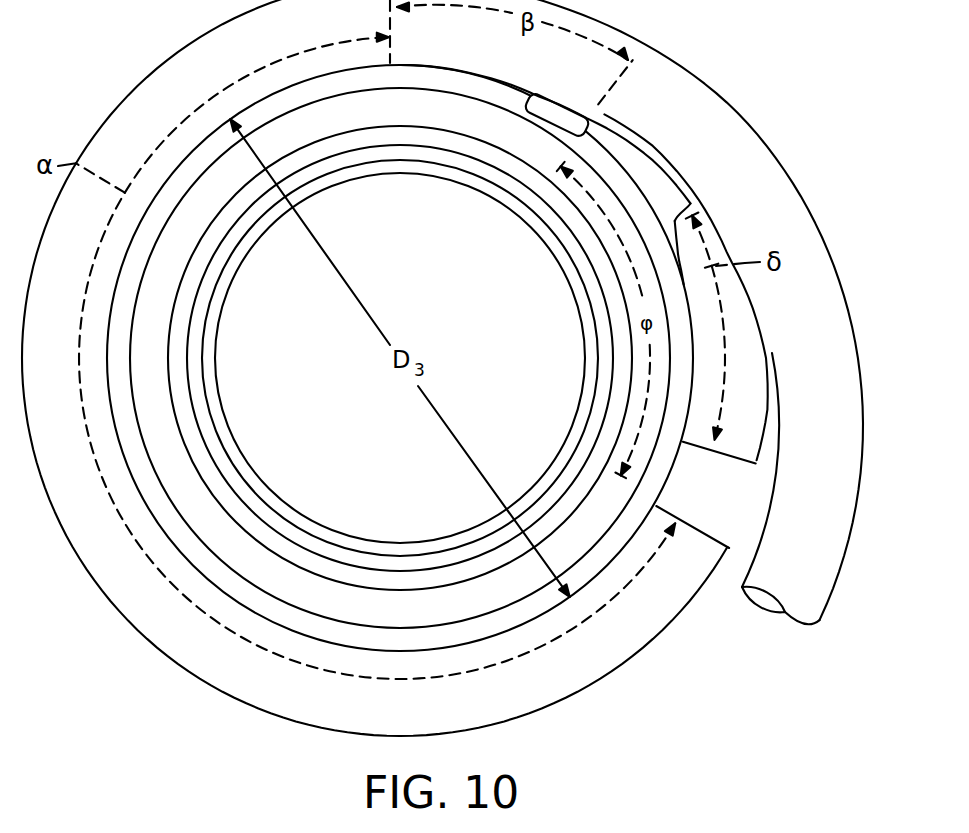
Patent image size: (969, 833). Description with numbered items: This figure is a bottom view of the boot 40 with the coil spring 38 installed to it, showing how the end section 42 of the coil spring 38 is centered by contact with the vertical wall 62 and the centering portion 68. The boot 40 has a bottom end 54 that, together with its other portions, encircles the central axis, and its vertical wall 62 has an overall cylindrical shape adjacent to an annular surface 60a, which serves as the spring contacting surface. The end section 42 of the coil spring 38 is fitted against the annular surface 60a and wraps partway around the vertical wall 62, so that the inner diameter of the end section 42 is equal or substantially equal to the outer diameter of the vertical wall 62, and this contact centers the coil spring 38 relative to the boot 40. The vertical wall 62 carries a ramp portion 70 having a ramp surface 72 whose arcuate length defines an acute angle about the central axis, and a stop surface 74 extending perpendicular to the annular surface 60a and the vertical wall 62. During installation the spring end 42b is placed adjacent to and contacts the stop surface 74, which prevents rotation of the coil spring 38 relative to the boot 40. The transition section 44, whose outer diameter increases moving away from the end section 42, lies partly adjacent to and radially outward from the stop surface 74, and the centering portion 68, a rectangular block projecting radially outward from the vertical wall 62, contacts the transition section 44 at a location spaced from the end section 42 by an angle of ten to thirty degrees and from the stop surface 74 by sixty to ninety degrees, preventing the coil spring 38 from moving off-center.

The coil spring 38 is at (604, 682).
The boot 40 is at (470, 105).
The end section 42 is at (211, 654).
The spring end 42b is at (710, 517).
The transition section 44 is at (803, 565).
The bottom end 54 is at (371, 158).
The annular surface 60a is at (681, 194).
The vertical wall 62 is at (627, 175).
The centering portion 68 is at (550, 112).
The ramp portion 70 is at (767, 426).
The ramp surface 72 is at (745, 341).
The stop surface 74 is at (688, 528).